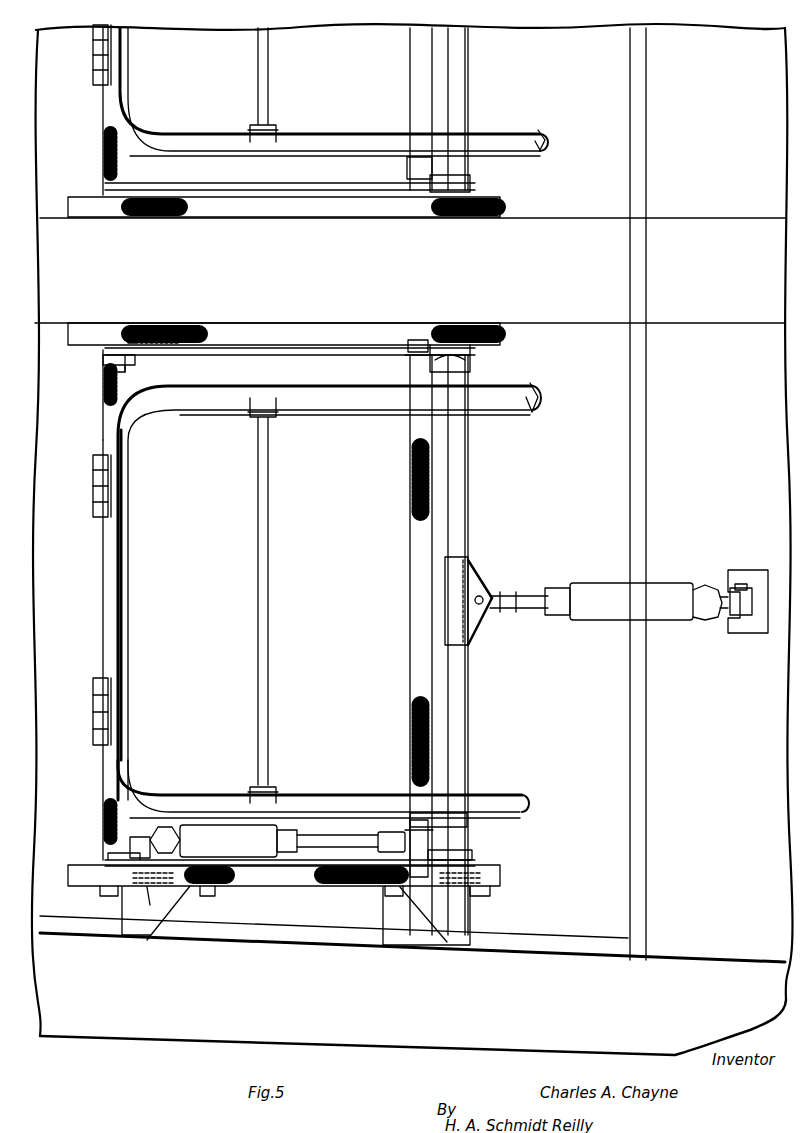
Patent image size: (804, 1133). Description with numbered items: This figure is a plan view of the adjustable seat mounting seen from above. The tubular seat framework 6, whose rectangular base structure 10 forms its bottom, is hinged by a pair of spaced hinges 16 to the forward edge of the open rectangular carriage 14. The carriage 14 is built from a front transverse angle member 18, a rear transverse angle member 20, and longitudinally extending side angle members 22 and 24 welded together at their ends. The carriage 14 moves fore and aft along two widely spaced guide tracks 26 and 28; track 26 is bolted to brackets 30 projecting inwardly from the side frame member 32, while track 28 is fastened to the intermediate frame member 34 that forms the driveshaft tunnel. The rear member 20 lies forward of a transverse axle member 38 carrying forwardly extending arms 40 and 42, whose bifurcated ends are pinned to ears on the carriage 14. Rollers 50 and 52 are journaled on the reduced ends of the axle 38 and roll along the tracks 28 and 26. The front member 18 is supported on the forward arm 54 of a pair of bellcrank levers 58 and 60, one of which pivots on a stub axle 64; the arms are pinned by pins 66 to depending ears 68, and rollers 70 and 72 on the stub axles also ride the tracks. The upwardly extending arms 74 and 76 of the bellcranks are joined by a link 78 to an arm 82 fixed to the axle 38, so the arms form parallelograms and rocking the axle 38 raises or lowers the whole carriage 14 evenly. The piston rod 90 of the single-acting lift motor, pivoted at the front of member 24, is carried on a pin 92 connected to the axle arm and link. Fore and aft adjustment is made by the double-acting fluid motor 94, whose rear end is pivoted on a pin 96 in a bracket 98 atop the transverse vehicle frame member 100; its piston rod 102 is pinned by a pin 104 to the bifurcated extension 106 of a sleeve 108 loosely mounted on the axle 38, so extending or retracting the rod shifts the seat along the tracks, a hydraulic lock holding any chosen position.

The framework 6 is at (512, 136).
The base structure 10 is at (380, 136).
The carriage 14 is at (110, 792).
The hinges 16 is at (93, 52).
The front angle member 18 is at (112, 160).
The rear angle member 20 is at (416, 60).
The side angle member 22 is at (122, 400).
The side angle member 24 is at (120, 810).
The guide track 26 is at (500, 876).
The guide track 28 is at (490, 323).
The brackets 30 is at (170, 930).
The side frame member 32 is at (102, 1040).
The intermediate frame member 34 is at (50, 268).
The axle member 38 is at (460, 70).
The arm 40 is at (455, 352).
The arm 42 is at (465, 820).
The roller 50 is at (488, 340).
The roller 52 is at (486, 868).
The arm 54 is at (160, 340).
The bellcrank lever 58 is at (100, 361).
The bellcrank lever 60 is at (105, 858).
The stub axle 64 is at (163, 880).
The pins 66 is at (248, 857).
The ears 68 is at (160, 827).
The roller 70 is at (135, 331).
The roller 72 is at (148, 883).
The arm 74 is at (128, 360).
The arm 76 is at (130, 850).
The link 78 is at (268, 188).
The arm 82 is at (430, 342).
The piston rod 90 is at (336, 835).
The pin 92 is at (412, 827).
The fluid motor 94 is at (612, 618).
The pin 96 is at (740, 584).
The bracket 98 is at (752, 634).
The transverse vehicle frame member 100 is at (662, 716).
The piston rod 102 is at (536, 592).
The pin 104 is at (478, 580).
The bifurcated extension 106 is at (478, 640).
The sleeve 108 is at (445, 593).